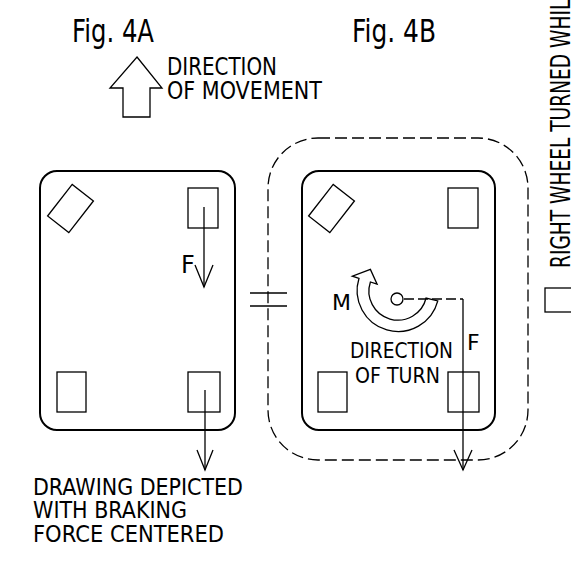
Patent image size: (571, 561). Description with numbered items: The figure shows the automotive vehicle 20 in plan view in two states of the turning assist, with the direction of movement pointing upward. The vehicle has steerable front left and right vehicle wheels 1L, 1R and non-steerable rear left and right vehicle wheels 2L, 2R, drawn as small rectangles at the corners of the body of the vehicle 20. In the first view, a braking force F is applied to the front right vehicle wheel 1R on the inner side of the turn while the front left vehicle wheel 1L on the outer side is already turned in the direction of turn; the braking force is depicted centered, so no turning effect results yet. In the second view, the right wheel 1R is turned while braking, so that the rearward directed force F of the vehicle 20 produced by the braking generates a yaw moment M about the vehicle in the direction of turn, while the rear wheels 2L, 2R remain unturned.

In FIG. 4A, the automotive vehicle 20 is at (225, 342).
In FIG. 4B, the automotive vehicle 20 is at (482, 363).
In FIG. 4A, the front left vehicle wheel 1L is at (58, 200).
In FIG. 4B, the front left vehicle wheel 1L is at (318, 200).
In FIG. 4A, the front right vehicle wheel 1R is at (200, 188).
In FIG. 4B, the front right vehicle wheel 1R is at (460, 188).
In FIG. 4A, the rear left vehicle wheel 2L is at (72, 412).
In FIG. 4B, the rear left vehicle wheel 2L is at (333, 412).
In FIG. 4A, the rear right vehicle wheel 2R is at (188, 390).
In FIG. 4B, the rear right vehicle wheel 2R is at (448, 390).